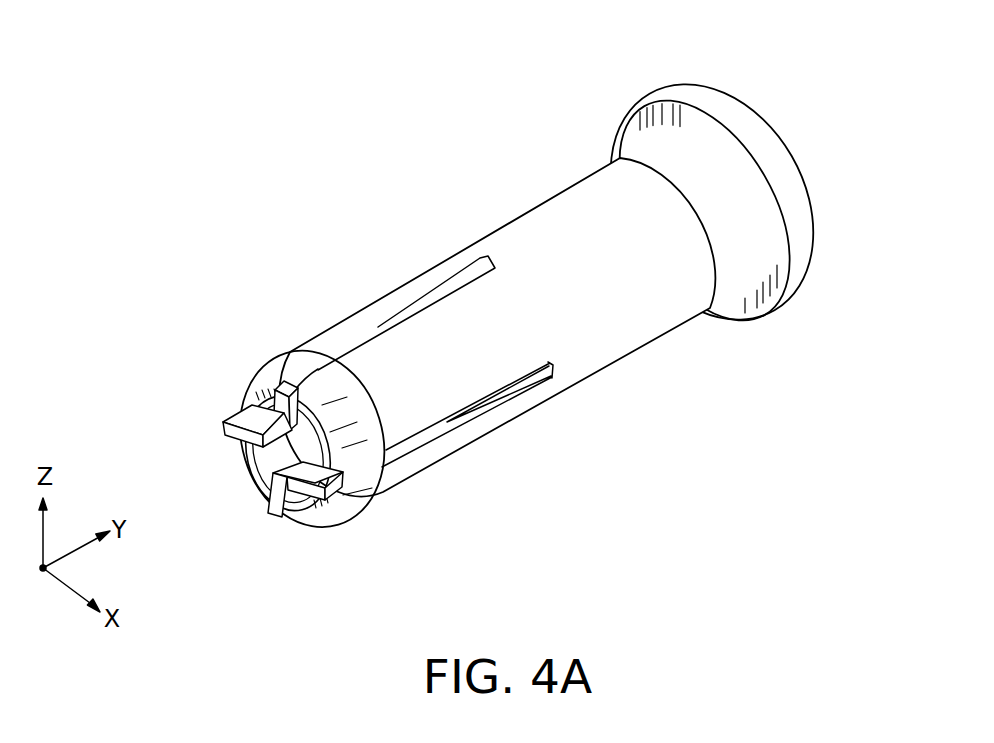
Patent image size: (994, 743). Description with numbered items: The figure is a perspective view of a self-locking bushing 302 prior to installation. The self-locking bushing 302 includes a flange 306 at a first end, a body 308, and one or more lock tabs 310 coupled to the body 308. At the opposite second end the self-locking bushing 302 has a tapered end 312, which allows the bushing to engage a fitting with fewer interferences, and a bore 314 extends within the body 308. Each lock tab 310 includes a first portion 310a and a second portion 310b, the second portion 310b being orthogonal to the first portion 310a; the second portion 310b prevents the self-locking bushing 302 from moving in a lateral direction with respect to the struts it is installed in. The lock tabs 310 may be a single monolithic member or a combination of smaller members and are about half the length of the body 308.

The self-locking bushing 302 is at (507, 279).
The flange 306 is at (797, 188).
The body 308 is at (622, 343).
The lock tab 310 is at (368, 325).
The first portion 310a is at (457, 288).
The second portion 310b is at (260, 395).
The tapered end 312 is at (296, 420).
The bore 314 is at (268, 462).